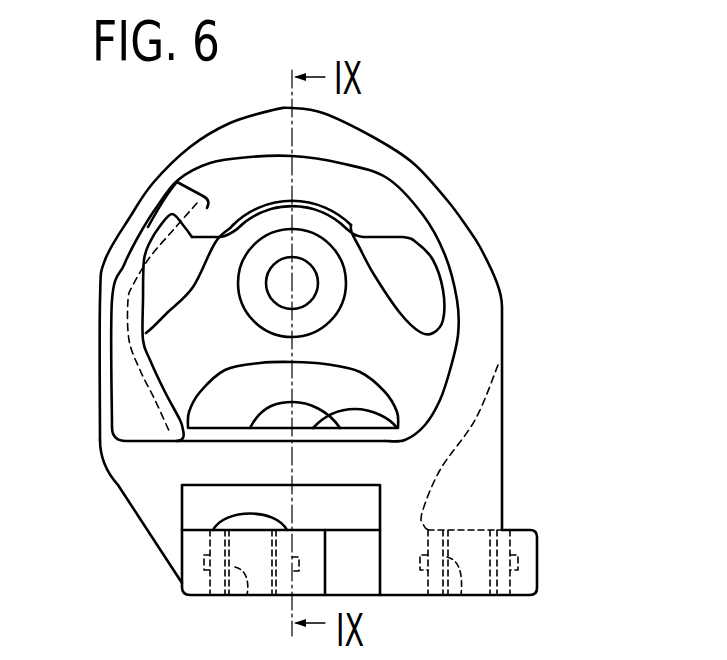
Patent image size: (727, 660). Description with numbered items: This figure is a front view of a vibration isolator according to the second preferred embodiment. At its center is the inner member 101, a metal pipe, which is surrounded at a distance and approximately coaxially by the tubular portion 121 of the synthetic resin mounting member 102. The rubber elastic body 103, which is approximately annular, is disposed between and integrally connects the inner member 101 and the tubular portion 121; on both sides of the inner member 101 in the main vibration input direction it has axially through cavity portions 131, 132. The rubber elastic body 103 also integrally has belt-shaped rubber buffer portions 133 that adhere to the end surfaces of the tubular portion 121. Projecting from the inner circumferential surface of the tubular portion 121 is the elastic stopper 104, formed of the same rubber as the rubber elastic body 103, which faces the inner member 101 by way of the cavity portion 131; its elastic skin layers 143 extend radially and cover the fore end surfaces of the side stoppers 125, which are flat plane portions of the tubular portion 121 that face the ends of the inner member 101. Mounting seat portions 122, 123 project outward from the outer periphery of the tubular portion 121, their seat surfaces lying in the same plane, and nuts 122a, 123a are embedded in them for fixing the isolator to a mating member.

The inner member 101 is at (320, 252).
The mounting member 102 is at (506, 326).
The rubber elastic body 103 is at (188, 347).
The elastic stopper 104 is at (255, 407).
The tubular portion 121 is at (473, 257).
The mounting seat portion 122 is at (530, 580).
The nut 122a is at (461, 595).
The mounting seat portion 123 is at (188, 575).
The nut 123a is at (247, 595).
The side stopper 125 is at (283, 450).
The cavity portion 131 is at (330, 385).
The cavity portion 132 is at (400, 263).
The rubber buffer portion 133 is at (150, 233).
The elastic skin layer 143 is at (330, 410).